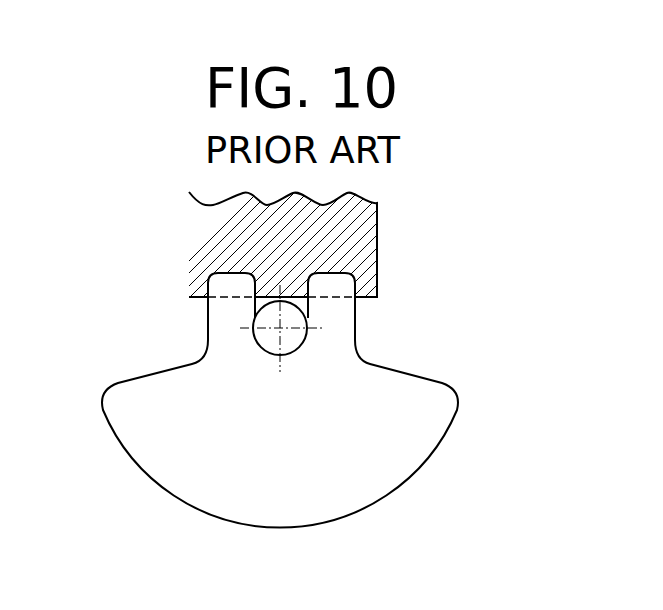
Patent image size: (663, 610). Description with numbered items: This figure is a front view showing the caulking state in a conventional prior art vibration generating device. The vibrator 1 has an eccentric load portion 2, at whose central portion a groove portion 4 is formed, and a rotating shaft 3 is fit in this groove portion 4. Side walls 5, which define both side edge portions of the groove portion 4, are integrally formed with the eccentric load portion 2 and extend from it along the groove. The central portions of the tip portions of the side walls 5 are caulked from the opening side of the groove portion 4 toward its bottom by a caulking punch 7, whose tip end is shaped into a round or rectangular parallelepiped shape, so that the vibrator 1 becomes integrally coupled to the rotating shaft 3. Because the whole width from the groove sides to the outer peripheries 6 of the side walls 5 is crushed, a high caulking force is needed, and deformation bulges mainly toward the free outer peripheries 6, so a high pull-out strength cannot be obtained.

The vibrator 1 is at (155, 498).
The eccentric load portion 2 is at (395, 472).
The rotating shaft 3 is at (297, 320).
The groove portion 4 is at (265, 347).
The side walls 5 is at (220, 317).
The outer peripheries 6 is at (207, 296).
The caulking punch 7 is at (372, 202).